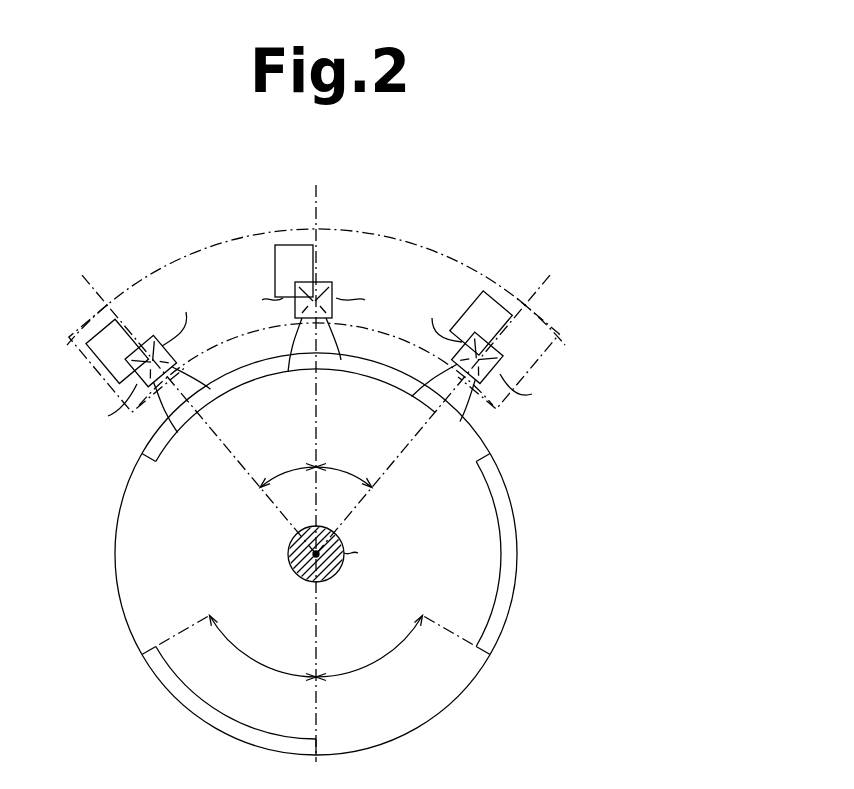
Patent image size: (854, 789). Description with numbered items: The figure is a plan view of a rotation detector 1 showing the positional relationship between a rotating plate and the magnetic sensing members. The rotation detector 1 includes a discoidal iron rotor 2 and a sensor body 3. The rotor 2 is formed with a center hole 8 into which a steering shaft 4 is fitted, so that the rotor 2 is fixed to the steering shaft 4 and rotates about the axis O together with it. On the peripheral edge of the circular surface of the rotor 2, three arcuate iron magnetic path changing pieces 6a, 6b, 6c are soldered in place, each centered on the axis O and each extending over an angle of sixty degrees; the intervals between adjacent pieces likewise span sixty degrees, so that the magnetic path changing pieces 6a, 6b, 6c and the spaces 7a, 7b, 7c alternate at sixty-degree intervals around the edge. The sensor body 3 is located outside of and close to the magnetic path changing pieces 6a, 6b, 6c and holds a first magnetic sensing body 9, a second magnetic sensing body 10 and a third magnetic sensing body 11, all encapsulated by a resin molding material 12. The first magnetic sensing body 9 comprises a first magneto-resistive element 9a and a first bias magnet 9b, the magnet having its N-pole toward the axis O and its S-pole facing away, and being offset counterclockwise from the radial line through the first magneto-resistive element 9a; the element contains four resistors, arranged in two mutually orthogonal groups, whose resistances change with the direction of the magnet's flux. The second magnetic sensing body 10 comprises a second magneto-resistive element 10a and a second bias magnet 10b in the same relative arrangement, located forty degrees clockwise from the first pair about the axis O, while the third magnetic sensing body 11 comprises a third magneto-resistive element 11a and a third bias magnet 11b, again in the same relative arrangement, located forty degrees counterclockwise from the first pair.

The rotation detector 1 is at (642, 239).
The rotor 2 is at (484, 675).
The sensor body 3 is at (556, 353).
The steering shaft 4 is at (342, 535).
The magnetic path changing piece 6a is at (141, 455).
The magnetic path changing piece 6b is at (514, 552).
The magnetic path changing piece 6c is at (183, 708).
The space 7a is at (481, 437).
The space 7b is at (438, 715).
The space 7c is at (138, 552).
The center hole 8 is at (290, 556).
The first magnetic sensing body 9 is at (332, 192).
The first magneto-resistive element 9a is at (331, 284).
The first bias magnet 9b is at (292, 246).
The second magnetic sensing body 10 is at (488, 234).
The second magneto-resistive element 10a is at (502, 350).
The second bias magnet 10b is at (496, 298).
The third magnetic sensing body 11 is at (72, 228).
The third magneto-resistive element 11a is at (150, 340).
The third bias magnet 11b is at (100, 334).
The resin molding material 12 is at (248, 232).